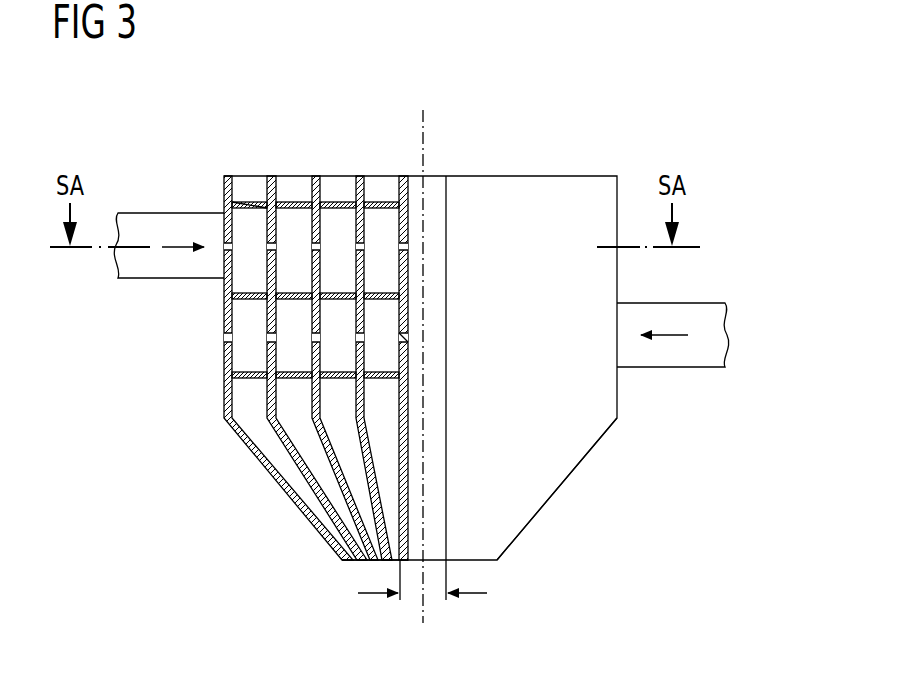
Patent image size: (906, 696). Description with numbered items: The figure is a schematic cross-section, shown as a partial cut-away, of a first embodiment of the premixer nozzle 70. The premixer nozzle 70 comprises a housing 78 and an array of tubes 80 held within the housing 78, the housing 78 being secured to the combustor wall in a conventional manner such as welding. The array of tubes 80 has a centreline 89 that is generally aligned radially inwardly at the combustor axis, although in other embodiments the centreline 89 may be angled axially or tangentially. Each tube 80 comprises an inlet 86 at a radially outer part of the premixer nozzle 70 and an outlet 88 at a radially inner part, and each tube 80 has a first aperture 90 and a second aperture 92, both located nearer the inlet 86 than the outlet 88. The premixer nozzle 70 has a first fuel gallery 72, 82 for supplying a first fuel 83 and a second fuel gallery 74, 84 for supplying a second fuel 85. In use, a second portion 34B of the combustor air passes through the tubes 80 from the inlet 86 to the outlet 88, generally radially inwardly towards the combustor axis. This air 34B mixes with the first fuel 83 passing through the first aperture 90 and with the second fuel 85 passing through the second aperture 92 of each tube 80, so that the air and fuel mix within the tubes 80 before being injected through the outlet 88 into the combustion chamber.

The second portion of the air 34B is at (444, 153).
The premixer nozzle 70 is at (576, 114).
The first fuel gallery 72 is at (697, 300).
The second fuel gallery 74 is at (140, 279).
The housing 78 is at (570, 477).
The array of tubes 80 is at (289, 320).
The first fuel gallery 82 is at (243, 332).
The first fuel 83 is at (668, 337).
The second gallery 84 is at (232, 297).
The second fuel 85 is at (175, 247).
The inlet 86 is at (289, 336).
The outlet 88 is at (353, 562).
The centreline 89 is at (423, 614).
The first aperture 90 is at (401, 336).
The second aperture 92 is at (232, 205).